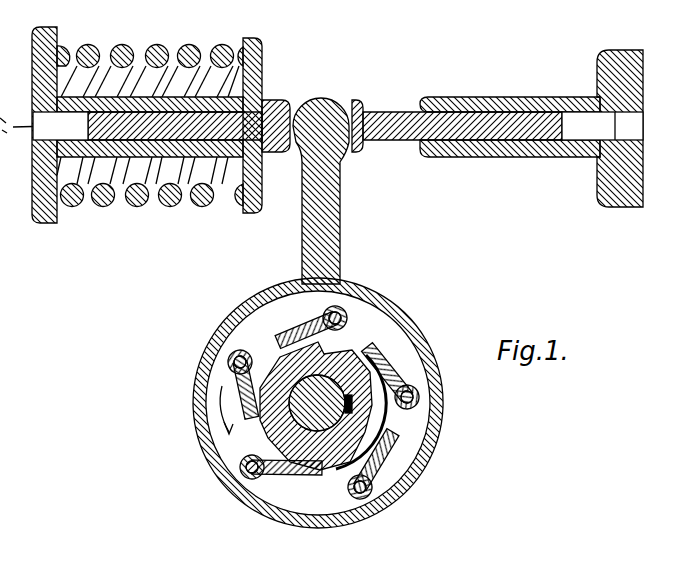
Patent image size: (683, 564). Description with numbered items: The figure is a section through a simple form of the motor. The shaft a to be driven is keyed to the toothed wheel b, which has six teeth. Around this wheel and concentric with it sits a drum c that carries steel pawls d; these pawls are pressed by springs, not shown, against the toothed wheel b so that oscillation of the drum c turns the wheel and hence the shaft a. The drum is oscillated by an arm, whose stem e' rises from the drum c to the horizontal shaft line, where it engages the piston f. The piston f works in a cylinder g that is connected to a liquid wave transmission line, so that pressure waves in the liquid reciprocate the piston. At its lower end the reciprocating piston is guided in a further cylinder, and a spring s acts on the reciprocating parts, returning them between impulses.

The shaft a is at (329, 392).
The toothed wheel b is at (362, 421).
The drum c is at (444, 404).
The steel pawls d is at (252, 358).
The casing stem e' is at (313, 191).
The piston f is at (384, 114).
The cylinder g is at (440, 158).
The spring s is at (130, 203).